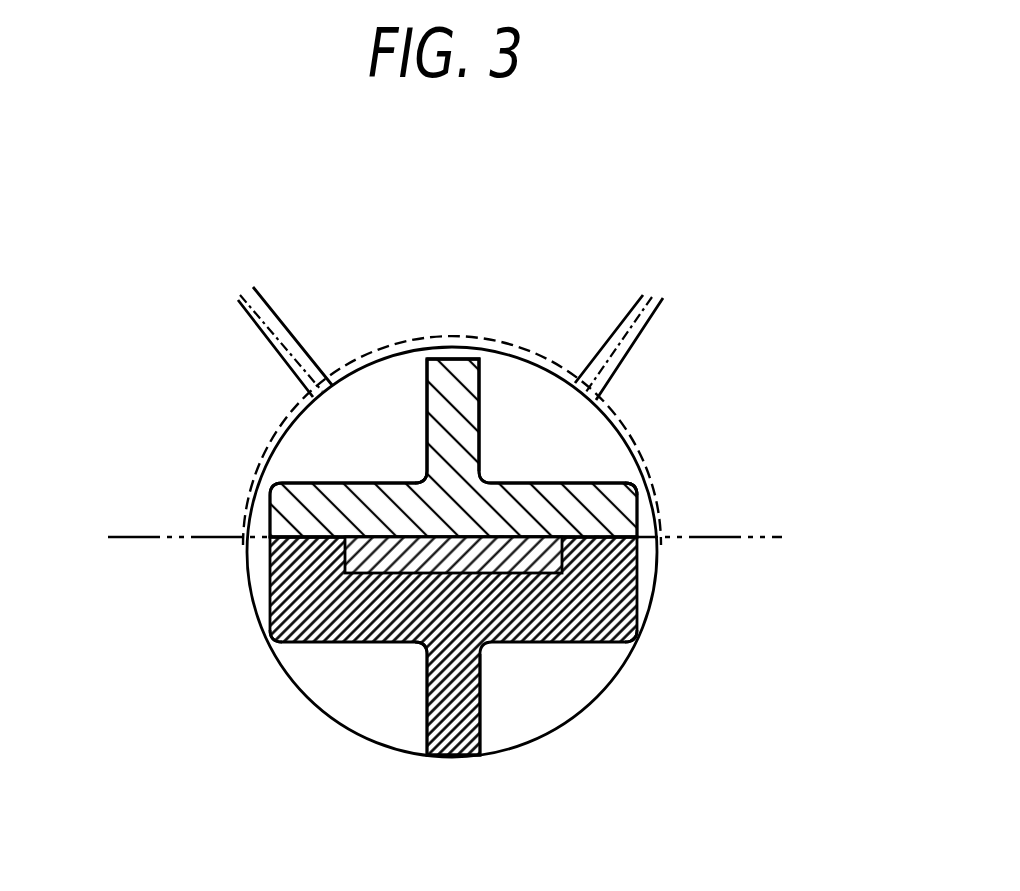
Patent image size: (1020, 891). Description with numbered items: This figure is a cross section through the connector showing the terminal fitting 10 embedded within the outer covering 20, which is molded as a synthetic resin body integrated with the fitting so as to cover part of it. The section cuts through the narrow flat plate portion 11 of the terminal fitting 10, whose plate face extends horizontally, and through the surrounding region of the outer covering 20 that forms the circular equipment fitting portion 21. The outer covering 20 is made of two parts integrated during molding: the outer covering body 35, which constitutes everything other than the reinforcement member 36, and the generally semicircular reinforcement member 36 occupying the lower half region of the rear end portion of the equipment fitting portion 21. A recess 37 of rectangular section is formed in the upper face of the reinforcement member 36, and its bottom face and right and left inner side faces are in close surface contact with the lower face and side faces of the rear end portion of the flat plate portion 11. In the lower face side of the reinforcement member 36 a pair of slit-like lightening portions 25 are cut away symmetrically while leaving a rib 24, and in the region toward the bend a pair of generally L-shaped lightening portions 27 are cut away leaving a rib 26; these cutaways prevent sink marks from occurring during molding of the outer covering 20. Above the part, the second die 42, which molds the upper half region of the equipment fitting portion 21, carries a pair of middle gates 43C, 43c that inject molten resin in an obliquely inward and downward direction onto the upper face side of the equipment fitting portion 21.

The terminal fitting 10 is at (446, 395).
The flat plate portion 11 is at (285, 578).
The outer covering 20 is at (650, 432).
The equipment fitting portion 21 is at (290, 506).
The rib 24 is at (460, 755).
The lightening portions 25 is at (428, 720).
The rib 26 is at (454, 360).
The lightening portions 27 is at (416, 382).
The outer covering body 35 is at (270, 625).
The reinforcement member 36 is at (492, 330).
The recess 37 is at (551, 574).
The second die 42 is at (763, 537).
The middle gates 43C is at (245, 307).
The middle gates 43c is at (644, 293).